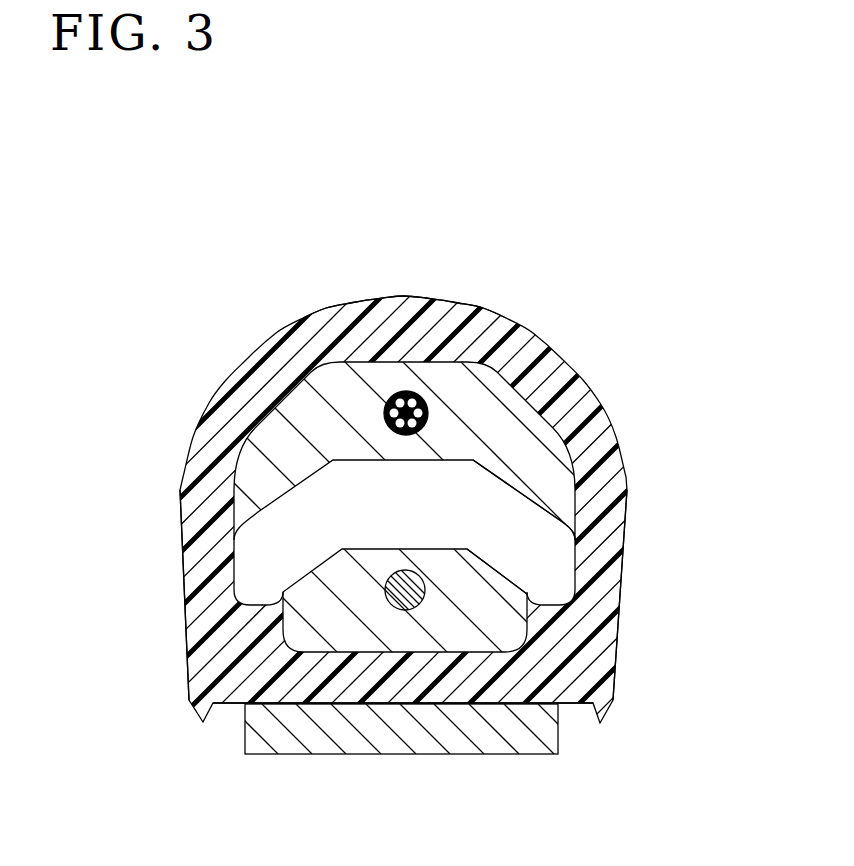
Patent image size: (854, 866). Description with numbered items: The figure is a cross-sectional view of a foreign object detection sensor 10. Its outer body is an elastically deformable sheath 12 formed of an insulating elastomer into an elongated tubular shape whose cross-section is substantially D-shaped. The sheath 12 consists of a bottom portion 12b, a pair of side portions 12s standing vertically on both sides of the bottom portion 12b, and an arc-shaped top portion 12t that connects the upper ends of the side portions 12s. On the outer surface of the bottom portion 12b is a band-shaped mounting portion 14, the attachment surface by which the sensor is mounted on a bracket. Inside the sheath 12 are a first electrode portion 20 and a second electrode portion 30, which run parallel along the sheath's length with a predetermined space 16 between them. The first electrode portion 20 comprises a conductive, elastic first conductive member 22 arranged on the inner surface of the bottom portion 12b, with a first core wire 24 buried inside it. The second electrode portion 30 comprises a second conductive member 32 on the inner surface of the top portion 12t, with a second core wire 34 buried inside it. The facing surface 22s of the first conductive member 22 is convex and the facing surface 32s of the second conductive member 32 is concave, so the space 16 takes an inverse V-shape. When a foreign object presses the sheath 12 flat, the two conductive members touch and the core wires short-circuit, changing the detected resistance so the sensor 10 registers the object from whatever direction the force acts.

The foreign object detection sensor 10 is at (592, 205).
The sheath 12 is at (645, 682).
The top portion 12t is at (460, 302).
The side portions 12s is at (183, 517).
The bottom portion 12b is at (318, 676).
The mounting portion 14 is at (488, 748).
The space 16 is at (404, 483).
The first electrode portion 20 is at (415, 803).
The first conductive member 22 is at (338, 635).
The facing surface of the first conductive member 22s is at (562, 595).
The first core wire 24 is at (407, 611).
The second electrode portion 30 is at (337, 242).
The second conductive member 32 is at (340, 380).
The facing surface of the second conductive member 32s is at (575, 540).
The second core wire 34 is at (414, 392).